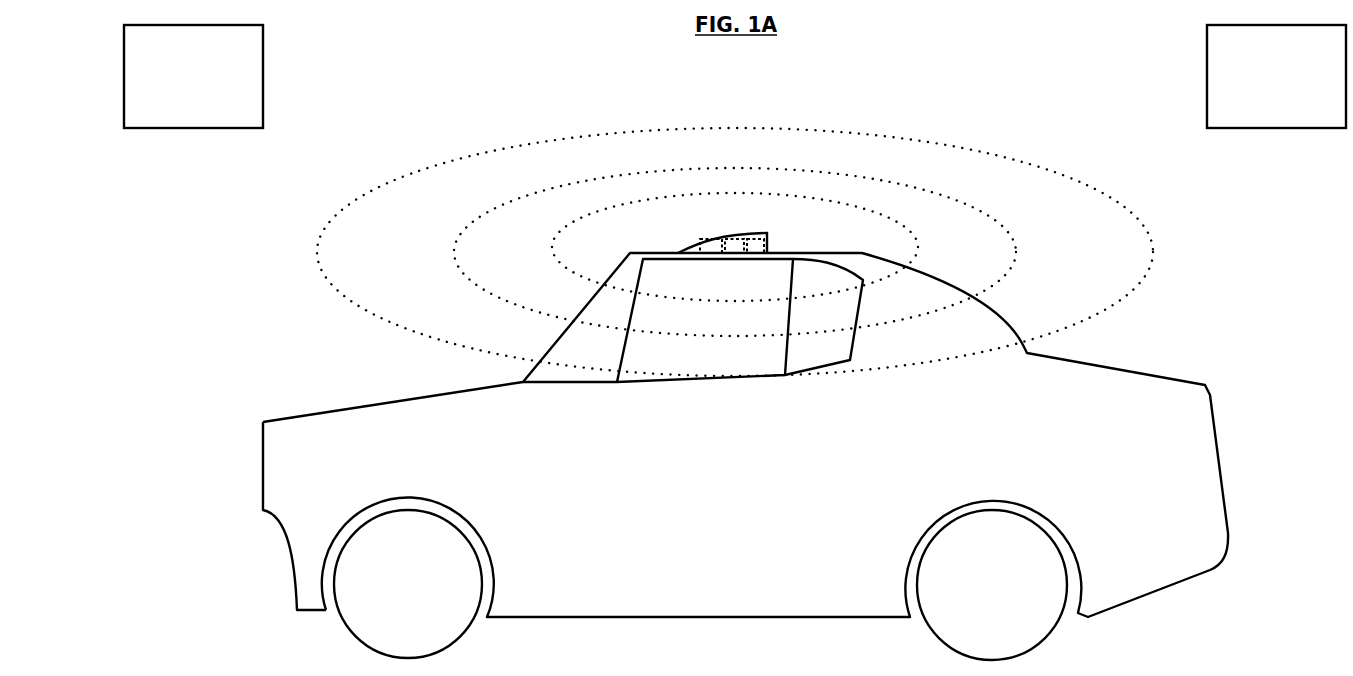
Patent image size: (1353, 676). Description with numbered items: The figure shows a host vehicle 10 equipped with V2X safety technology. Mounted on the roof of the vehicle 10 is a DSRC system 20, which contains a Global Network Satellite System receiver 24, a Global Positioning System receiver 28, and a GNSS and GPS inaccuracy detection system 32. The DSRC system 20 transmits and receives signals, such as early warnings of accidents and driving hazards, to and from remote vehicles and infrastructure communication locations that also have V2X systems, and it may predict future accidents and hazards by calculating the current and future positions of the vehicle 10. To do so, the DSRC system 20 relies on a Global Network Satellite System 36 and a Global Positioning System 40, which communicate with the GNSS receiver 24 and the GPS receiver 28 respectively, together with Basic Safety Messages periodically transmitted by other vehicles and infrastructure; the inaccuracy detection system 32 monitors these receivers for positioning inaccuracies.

The vehicle 10 is at (392, 400).
The DSRC system 20 is at (680, 252).
The Global Network Satellite System (GNSS) receiver 24 is at (769, 240).
The Global Positioning System (GPS) receiver 28 is at (733, 239).
The GNSS and GPS inaccuracy detection system 32 is at (704, 239).
The Global Network Satellite System (GNSS) 36 is at (124, 74).
The Global Positioning System (GPS) 40 is at (1207, 74).